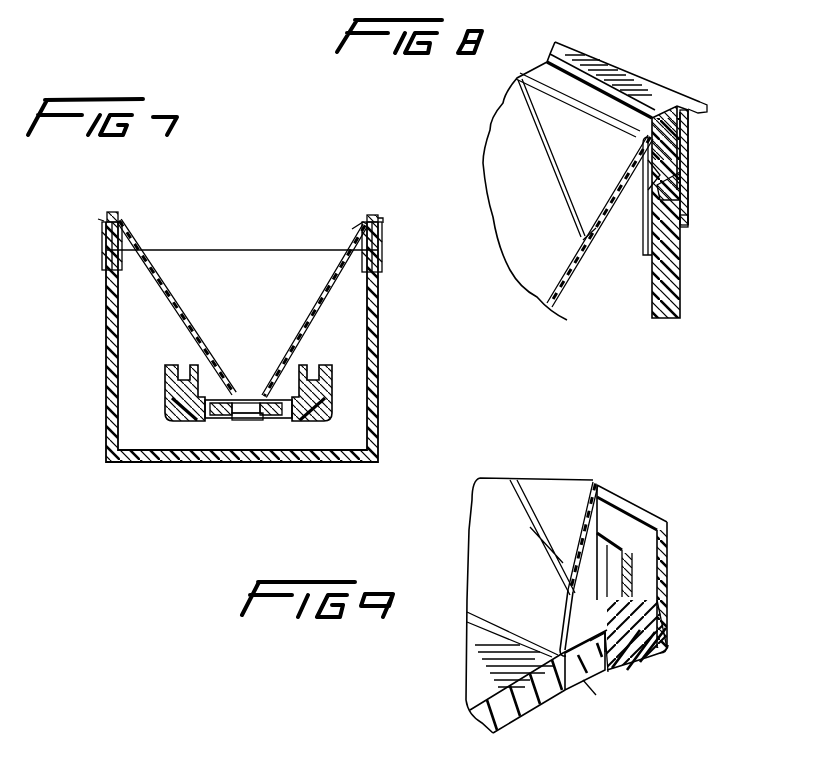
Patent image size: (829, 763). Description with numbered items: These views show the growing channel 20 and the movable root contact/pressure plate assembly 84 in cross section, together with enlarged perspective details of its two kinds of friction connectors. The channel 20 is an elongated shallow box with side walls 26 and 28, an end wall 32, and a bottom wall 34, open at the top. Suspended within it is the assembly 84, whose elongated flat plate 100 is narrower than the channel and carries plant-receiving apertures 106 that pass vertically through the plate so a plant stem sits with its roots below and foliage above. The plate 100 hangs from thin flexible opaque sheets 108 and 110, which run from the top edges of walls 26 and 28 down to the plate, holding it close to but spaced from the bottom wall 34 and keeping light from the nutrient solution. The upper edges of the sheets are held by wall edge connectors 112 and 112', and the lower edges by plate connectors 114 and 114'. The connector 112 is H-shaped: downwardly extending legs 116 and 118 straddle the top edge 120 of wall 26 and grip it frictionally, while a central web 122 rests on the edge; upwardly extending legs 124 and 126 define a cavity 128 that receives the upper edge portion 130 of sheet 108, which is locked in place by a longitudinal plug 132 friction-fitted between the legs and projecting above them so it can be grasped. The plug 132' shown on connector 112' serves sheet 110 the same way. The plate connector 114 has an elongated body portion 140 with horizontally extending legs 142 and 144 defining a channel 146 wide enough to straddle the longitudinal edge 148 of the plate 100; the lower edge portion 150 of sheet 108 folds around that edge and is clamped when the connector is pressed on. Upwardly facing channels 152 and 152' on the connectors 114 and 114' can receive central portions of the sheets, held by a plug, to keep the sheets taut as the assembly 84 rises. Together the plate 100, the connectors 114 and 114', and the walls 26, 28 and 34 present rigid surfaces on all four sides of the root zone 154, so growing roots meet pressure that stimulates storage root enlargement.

In FIG. 7, the channel 20 is at (103, 425).
In FIG. 7, the side wall 26 is at (380, 424).
In FIG. 8, the side wall 26 is at (673, 287).
In FIG. 7, the side wall 28 is at (107, 367).
In FIG. 7, the end wall 32 is at (219, 256).
In FIG. 7, the bottom wall 34 is at (242, 455).
In FIG. 7, the movable root contact/pressure plate assembly 84 is at (303, 297).
In FIG. 9, the movable root contact/pressure plate assembly 84 is at (485, 537).
In FIG. 7, the plate 100 is at (227, 413).
In FIG. 9, the plate 100 is at (483, 715).
In FIG. 7, the plant-receiving aperture 106 is at (250, 401).
In FIG. 7, the sheet 108 is at (356, 228).
In FIG. 8, the sheet 108 is at (513, 193).
In FIG. 9, the sheet 108 is at (553, 487).
In FIG. 7, the sheet 110 is at (122, 228).
In FIG. 7, the wall edge connector 112 is at (402, 251).
In FIG. 8, the wall edge connector 112 is at (721, 167).
In FIG. 7, the wall edge connector 112' is at (80, 246).
In FIG. 7, the plate connector 114 is at (332, 420).
In FIG. 9, the plate connector 114 is at (695, 599).
In FIG. 7, the plate connector 114' is at (158, 420).
In FIG. 8, the leg 116 is at (688, 222).
In FIG. 8, the leg 118 is at (645, 250).
In FIG. 8, the top edge 120 is at (670, 197).
In FIG. 8, the central web 122 is at (647, 250).
In FIG. 8, the leg 124 is at (687, 137).
In FIG. 8, the leg 126 is at (647, 153).
In FIG. 8, the cavity 128 is at (647, 173).
In FIG. 7, the upper edge portion 130 is at (384, 222).
In FIG. 8, the upper edge portion 130 is at (683, 105).
In FIG. 7, the plug 132 is at (384, 190).
In FIG. 8, the plug 132 is at (665, 104).
In FIG. 7, the fastener tab 132' is at (123, 190).
In FIG. 9, the body portion 140 is at (657, 630).
In FIG. 9, the leg 142 is at (556, 605).
In FIG. 9, the leg 144 is at (596, 697).
In FIG. 9, the channel 146 is at (600, 680).
In FIG. 9, the longitudinal edge 148 is at (583, 682).
In FIG. 9, the lower edge portion 150 is at (608, 655).
In FIG. 7, the upwardly facing channel 152 is at (321, 368).
In FIG. 9, the upwardly facing channel 152 is at (638, 554).
In FIG. 7, the upwardly facing channel 152' is at (168, 368).
In FIG. 7, the root zone 154 is at (257, 442).